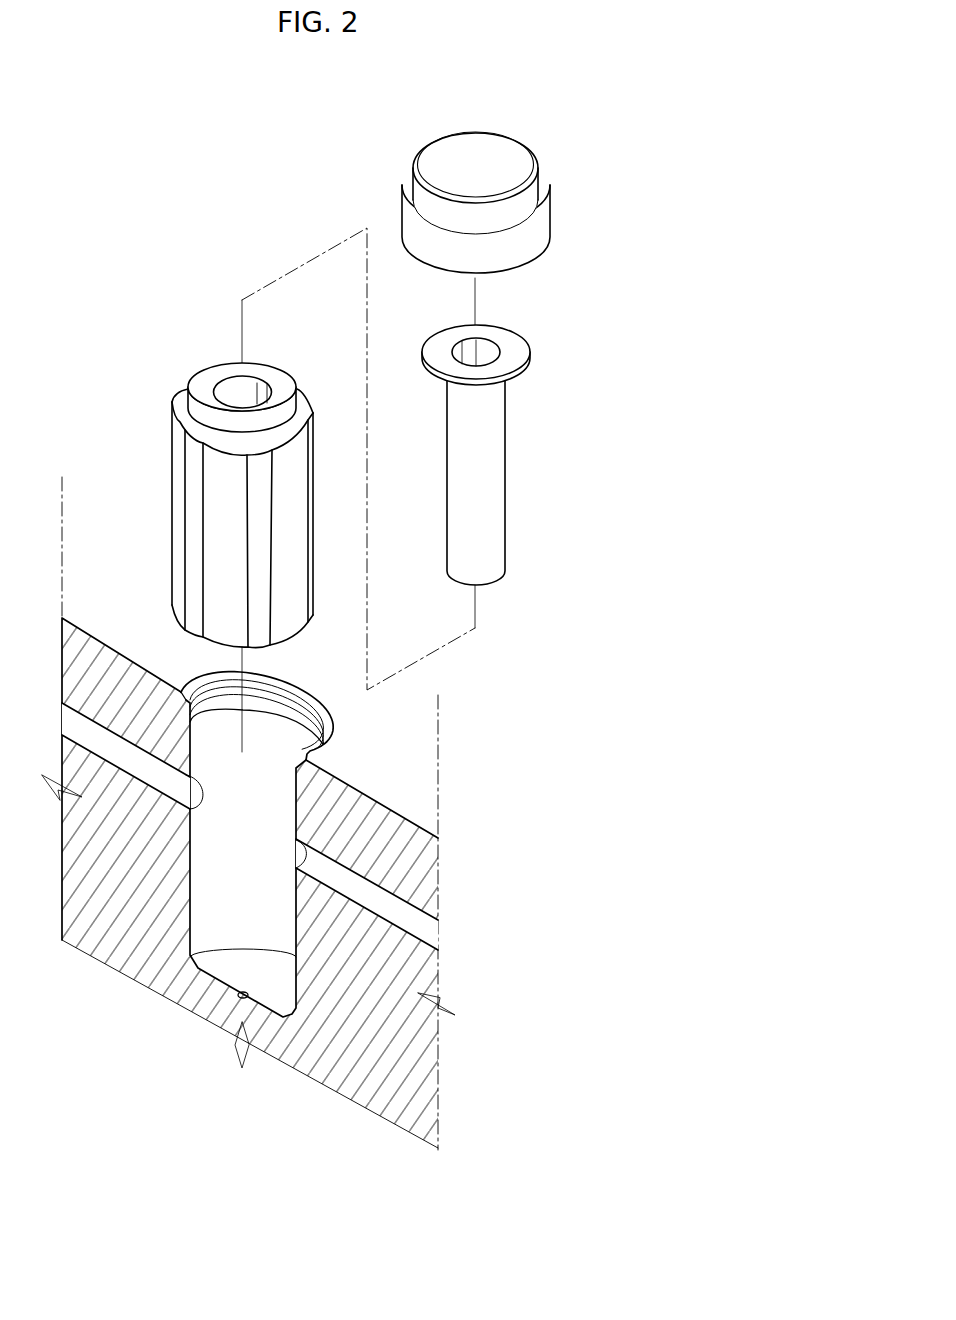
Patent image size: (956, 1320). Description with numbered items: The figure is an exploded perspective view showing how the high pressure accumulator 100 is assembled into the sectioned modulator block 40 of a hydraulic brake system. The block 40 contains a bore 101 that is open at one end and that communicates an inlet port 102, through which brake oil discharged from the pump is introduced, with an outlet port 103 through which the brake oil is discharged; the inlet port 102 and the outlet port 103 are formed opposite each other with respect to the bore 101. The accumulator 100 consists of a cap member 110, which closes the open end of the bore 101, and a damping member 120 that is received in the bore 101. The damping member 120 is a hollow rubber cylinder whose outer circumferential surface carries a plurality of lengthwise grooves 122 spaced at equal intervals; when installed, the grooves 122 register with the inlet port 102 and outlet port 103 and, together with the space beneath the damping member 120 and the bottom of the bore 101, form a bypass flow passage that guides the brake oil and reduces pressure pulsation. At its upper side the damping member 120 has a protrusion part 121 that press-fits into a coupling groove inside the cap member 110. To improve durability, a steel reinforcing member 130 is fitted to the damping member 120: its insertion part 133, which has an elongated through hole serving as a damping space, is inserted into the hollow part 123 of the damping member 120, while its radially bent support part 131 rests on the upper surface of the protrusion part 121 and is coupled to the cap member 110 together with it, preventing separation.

The high pressure accumulator 100 is at (200, 237).
The cap member 110 is at (528, 238).
The damping member 120 is at (221, 490).
The protrusion part 121 is at (208, 385).
The groove 122 is at (236, 563).
The hollow part 123 is at (254, 388).
The reinforcing member 130 is at (530, 455).
The support part 131 is at (509, 355).
The insertion part 133 is at (493, 470).
The base block 40 is at (478, 660).
The bore 101 is at (208, 887).
The inlet port 102 is at (88, 731).
The outlet port 103 is at (408, 920).